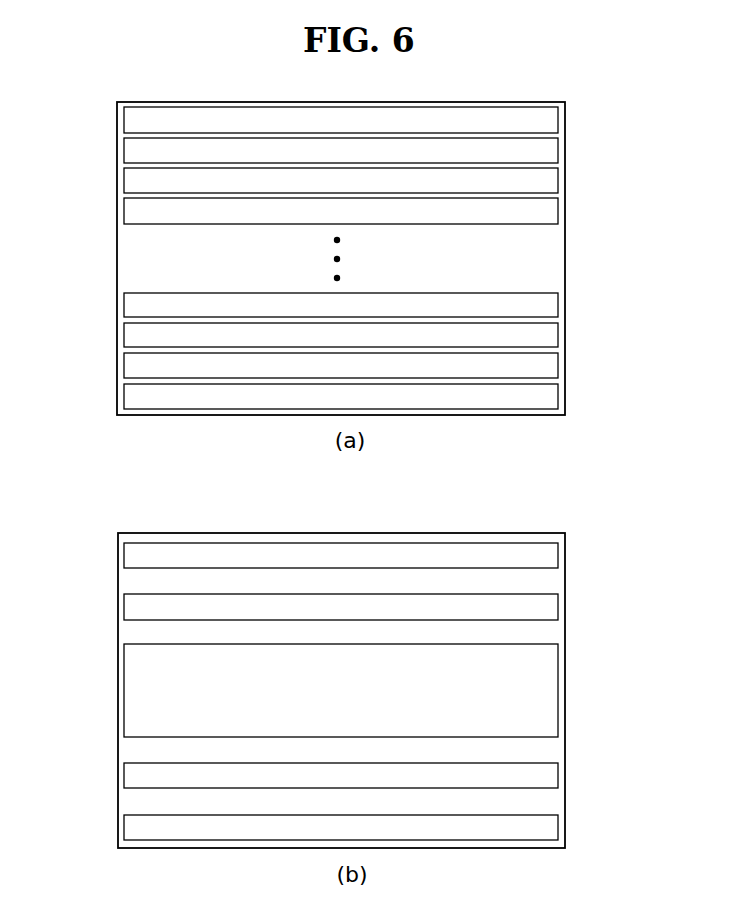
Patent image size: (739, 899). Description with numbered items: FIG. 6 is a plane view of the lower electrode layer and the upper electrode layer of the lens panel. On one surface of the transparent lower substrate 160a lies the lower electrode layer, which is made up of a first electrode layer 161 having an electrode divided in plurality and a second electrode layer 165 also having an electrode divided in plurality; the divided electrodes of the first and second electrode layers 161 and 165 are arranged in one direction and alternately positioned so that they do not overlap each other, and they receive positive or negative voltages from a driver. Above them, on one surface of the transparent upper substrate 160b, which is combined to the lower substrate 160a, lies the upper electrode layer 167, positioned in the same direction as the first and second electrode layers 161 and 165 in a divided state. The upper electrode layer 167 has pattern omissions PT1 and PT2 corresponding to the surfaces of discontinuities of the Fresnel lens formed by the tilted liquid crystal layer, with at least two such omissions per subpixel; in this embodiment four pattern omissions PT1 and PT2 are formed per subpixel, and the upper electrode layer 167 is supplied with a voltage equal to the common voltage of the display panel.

The lower substrate 160a is at (565, 115).
The upper substrate 160b is at (565, 555).
The first electrode layer 161 is at (127, 119).
The second electrode layer 165 is at (545, 150).
The upper electrode layer 167 is at (551, 690).
The pattern omission PT1 is at (132, 629).
The pattern omission PT2 is at (132, 580).